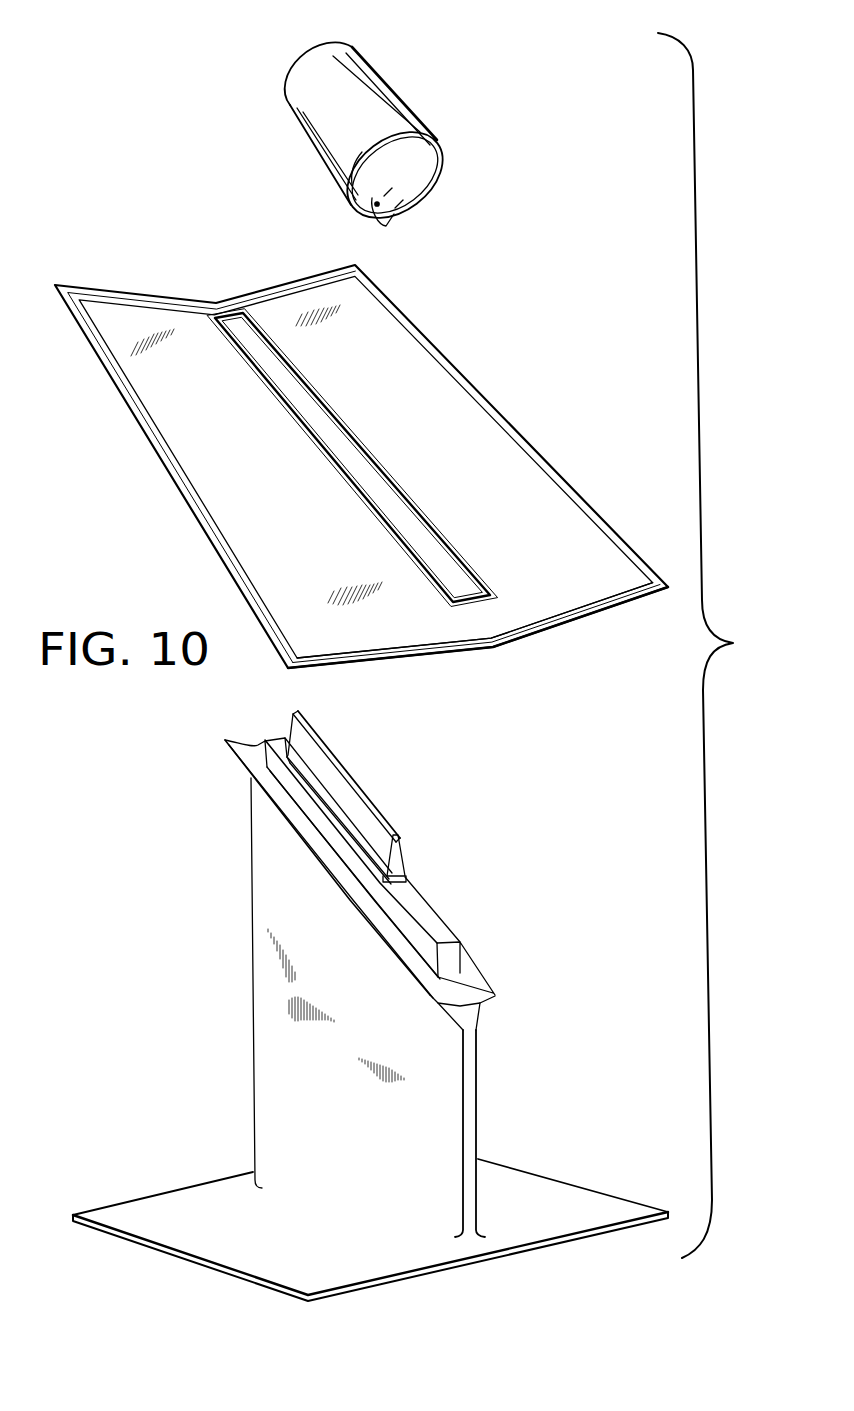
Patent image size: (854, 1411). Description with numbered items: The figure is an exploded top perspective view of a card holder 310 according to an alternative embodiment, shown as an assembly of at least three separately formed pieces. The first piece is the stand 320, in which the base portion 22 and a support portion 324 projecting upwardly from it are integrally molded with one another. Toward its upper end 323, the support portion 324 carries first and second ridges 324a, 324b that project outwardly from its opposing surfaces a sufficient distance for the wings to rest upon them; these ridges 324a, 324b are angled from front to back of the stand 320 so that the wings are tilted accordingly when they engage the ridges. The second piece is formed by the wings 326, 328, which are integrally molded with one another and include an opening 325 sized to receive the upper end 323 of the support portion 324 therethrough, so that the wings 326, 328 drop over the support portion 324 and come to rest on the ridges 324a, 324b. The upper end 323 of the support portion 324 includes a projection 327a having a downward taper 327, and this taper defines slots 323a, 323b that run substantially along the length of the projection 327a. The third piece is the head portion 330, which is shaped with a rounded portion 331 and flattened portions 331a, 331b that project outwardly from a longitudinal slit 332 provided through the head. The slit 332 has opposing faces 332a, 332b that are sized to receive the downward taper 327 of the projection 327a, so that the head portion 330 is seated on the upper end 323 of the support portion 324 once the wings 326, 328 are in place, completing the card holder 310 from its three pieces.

The base portion 22 is at (582, 1203).
The card holder 310 is at (512, 842).
The stand 320 is at (718, 645).
The upper end 323 is at (443, 935).
The slot 323a is at (355, 836).
The slot 323b is at (400, 884).
The support portion 324 is at (437, 1120).
The first ridge 324a is at (343, 863).
The second ridge 324b is at (485, 1010).
The opening 325 is at (285, 352).
The wing 326 is at (557, 583).
The downward taper 327 is at (327, 783).
The projection 327a is at (406, 864).
The wing 328 is at (247, 507).
The head portion 330 is at (292, 50).
The rounded portion 331 is at (370, 87).
The flattened portion 331a is at (360, 210).
The flattened portion 331b is at (395, 213).
The longitudinal slit 332 is at (387, 222).
The opposing face 332a is at (386, 220).
The opposing face 332b is at (380, 197).